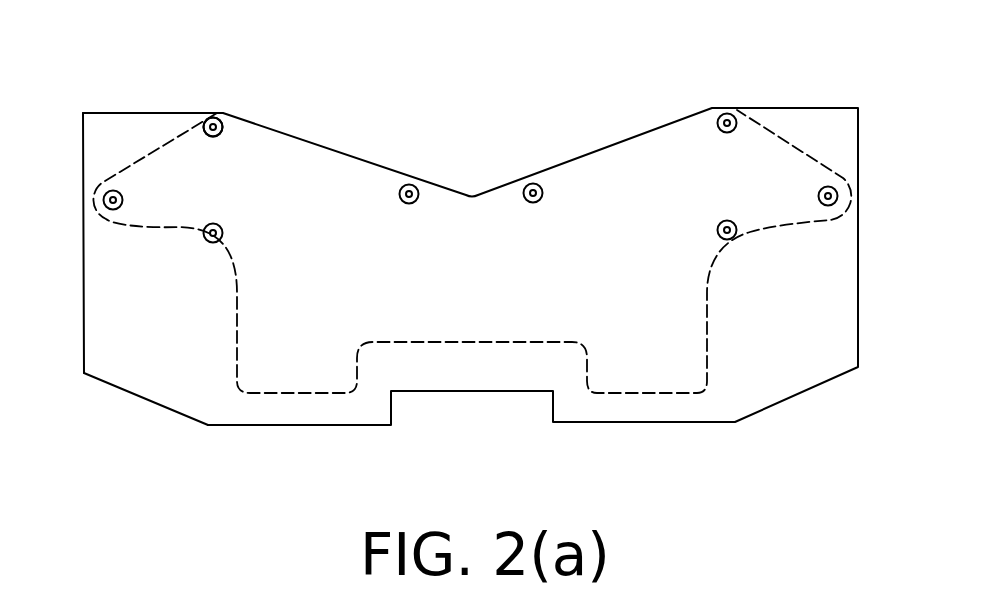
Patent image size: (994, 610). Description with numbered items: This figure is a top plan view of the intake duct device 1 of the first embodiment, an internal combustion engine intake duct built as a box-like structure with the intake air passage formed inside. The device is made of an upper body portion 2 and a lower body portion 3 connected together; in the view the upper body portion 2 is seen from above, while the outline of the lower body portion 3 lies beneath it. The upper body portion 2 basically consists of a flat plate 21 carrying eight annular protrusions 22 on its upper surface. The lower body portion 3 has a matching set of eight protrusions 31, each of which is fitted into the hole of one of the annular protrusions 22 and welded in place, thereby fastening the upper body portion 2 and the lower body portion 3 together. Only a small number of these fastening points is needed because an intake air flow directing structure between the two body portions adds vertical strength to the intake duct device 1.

The intake duct device 1 is at (442, 287).
The upper body portion 2 is at (84, 317).
The flat plate 21 is at (147, 372).
The annular protrusions 22 is at (220, 135).
The lower body portion 3 is at (100, 222).
The protrusions 31 is at (215, 119).